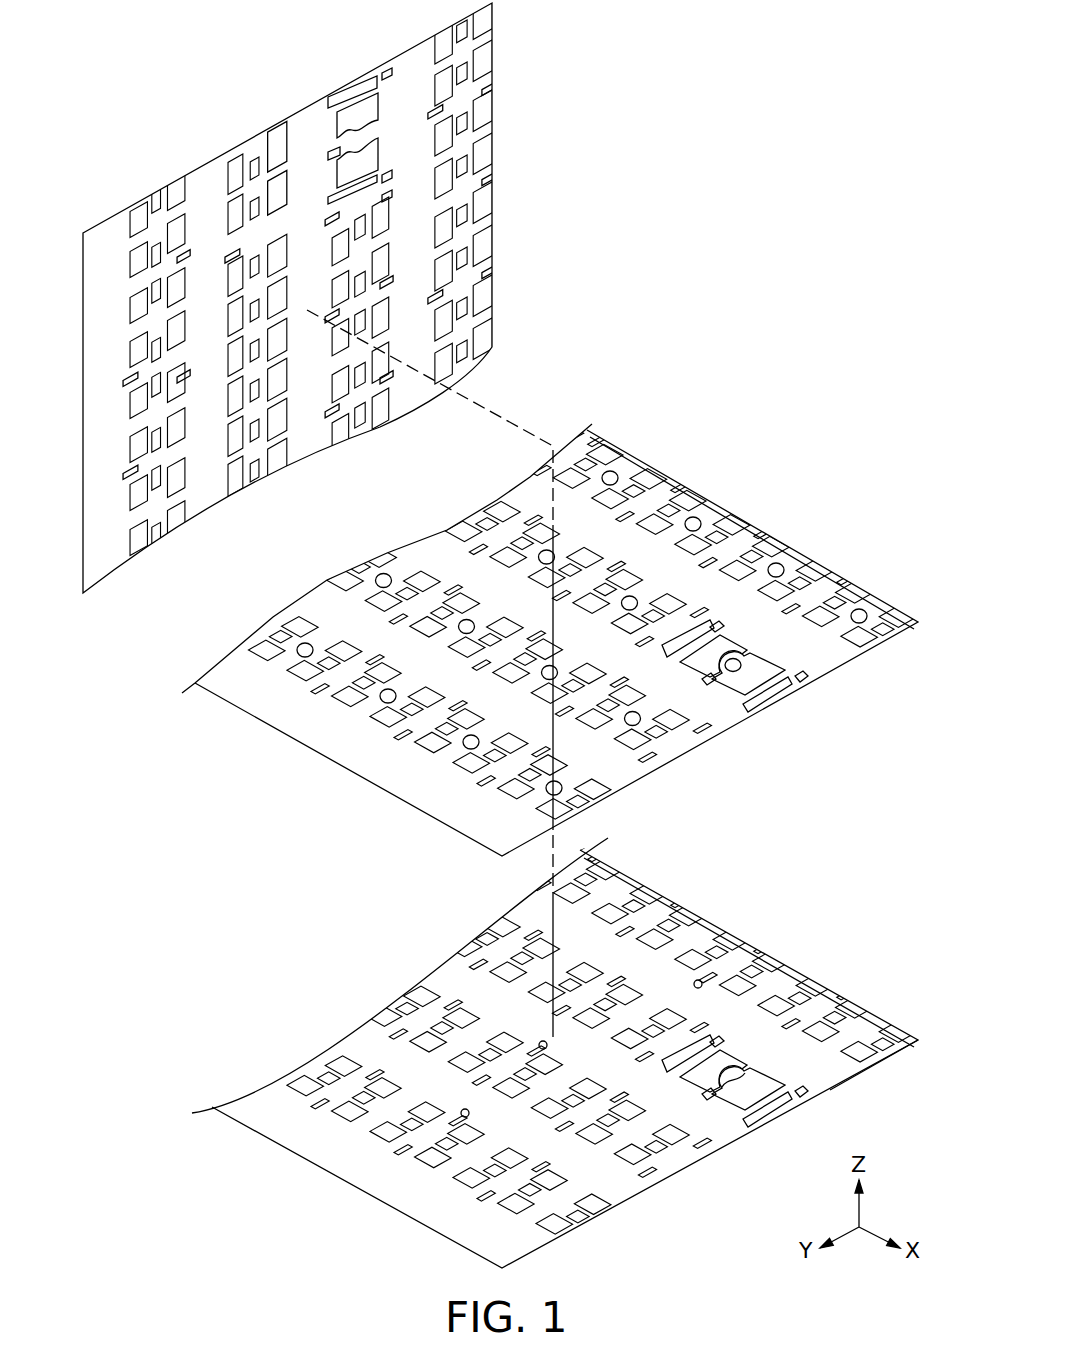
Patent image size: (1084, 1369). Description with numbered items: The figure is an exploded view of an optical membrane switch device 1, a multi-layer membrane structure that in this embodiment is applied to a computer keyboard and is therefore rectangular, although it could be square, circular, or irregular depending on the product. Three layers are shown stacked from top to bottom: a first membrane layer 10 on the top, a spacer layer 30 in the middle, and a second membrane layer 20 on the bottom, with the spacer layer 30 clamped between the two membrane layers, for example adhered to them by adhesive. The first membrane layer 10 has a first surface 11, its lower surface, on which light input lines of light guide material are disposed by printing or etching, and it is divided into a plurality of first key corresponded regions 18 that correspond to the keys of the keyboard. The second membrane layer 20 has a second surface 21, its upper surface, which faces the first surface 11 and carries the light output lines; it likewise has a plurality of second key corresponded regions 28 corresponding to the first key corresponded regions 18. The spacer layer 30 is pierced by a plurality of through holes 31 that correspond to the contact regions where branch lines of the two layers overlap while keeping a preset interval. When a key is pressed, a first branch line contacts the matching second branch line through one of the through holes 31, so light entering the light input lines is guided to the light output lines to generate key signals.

The optical membrane switch device 1 is at (750, 208).
The first membrane layer 10 is at (331, 296).
The first surface 11 is at (410, 85).
The first key corresponded regions 18 is at (465, 50).
The second membrane layer 20 is at (561, 1039).
The second surface 21 is at (810, 1070).
The second key corresponded regions 28 is at (617, 893).
The spacer layer 30 is at (552, 625).
The through holes 31 is at (616, 473).